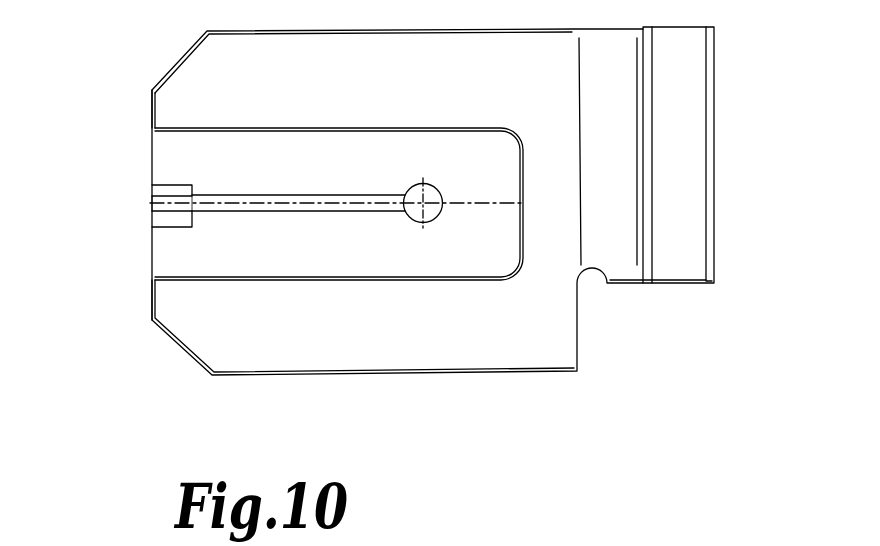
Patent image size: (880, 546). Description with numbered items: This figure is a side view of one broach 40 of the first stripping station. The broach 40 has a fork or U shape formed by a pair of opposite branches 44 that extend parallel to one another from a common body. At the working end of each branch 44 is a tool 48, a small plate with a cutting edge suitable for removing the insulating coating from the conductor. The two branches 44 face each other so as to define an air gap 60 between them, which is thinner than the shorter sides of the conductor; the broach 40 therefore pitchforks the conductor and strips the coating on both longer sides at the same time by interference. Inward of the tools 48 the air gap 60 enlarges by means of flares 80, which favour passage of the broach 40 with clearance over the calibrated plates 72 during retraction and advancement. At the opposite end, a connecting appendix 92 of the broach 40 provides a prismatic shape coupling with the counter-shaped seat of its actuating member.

The broach 40 is at (139, 110).
The branch 44 is at (187, 107).
The tool 48 is at (160, 192).
The air gap 60 is at (148, 204).
The flare 80 is at (200, 211).
The connecting appendix 92 is at (686, 162).
The calibrated plate 72 is at (401, 537).